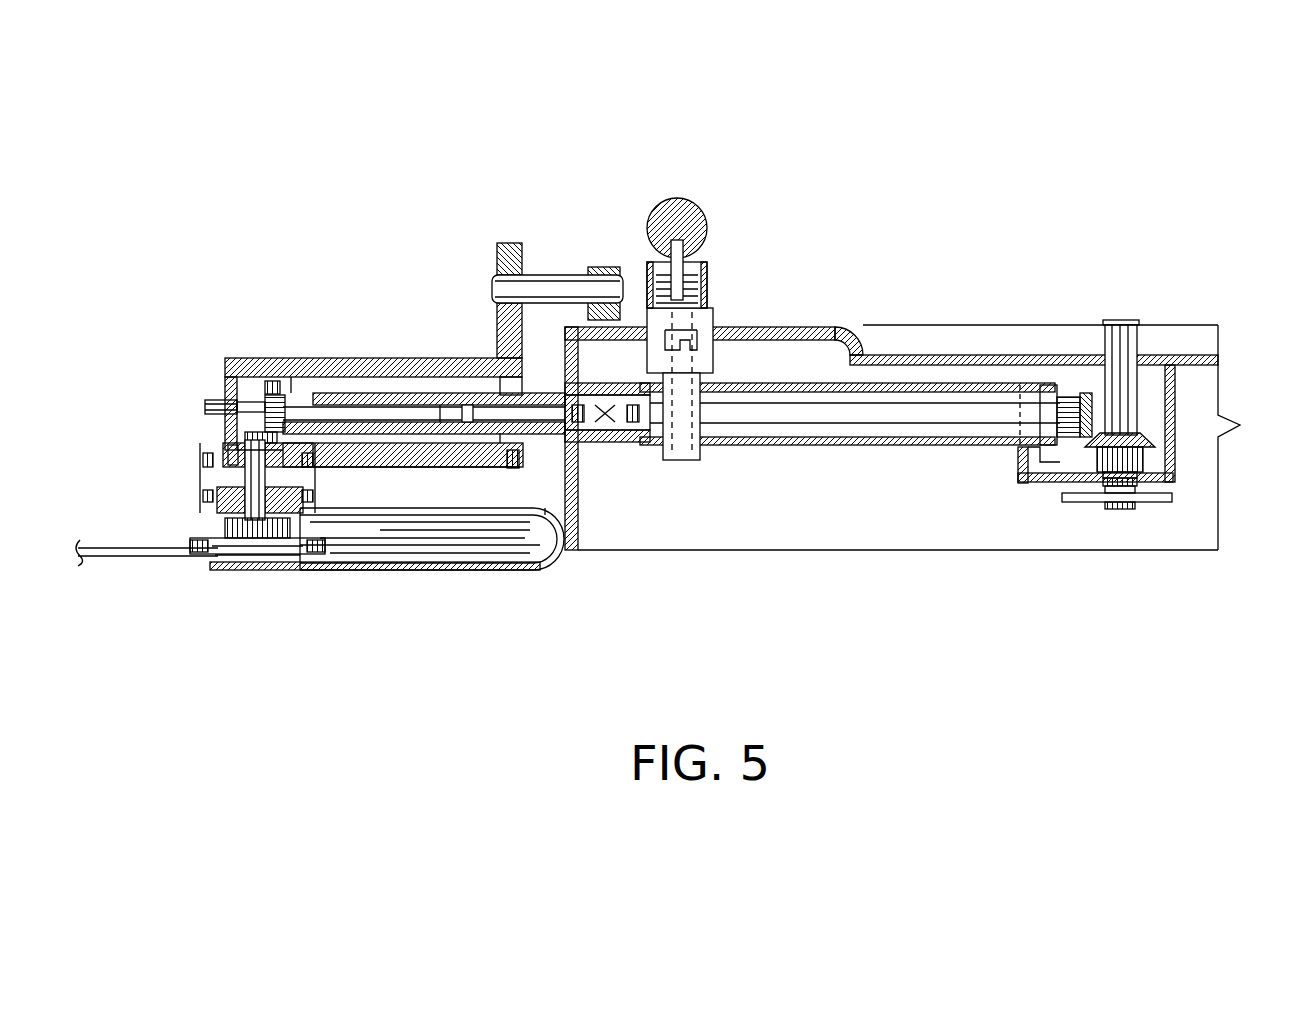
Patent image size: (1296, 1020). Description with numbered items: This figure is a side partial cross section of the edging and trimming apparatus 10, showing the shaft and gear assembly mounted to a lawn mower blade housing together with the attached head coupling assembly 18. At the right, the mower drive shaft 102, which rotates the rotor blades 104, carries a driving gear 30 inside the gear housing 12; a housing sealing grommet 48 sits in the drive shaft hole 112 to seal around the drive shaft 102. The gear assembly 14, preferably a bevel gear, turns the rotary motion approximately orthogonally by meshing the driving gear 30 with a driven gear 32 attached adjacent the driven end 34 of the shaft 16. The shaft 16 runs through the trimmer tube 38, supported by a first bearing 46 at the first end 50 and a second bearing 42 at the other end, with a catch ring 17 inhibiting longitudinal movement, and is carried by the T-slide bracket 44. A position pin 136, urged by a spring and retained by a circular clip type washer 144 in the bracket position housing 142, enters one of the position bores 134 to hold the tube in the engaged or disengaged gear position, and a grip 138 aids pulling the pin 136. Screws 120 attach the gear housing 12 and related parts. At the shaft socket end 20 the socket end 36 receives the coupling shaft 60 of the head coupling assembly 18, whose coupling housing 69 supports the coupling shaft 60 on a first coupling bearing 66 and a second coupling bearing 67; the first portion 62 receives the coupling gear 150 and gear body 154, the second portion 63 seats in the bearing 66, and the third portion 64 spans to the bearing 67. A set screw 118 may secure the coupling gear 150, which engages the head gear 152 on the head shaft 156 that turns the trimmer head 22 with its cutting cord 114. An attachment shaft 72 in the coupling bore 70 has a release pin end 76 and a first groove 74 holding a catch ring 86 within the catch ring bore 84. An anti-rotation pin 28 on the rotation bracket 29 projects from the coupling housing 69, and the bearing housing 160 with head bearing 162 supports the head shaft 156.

The edging and trimming apparatus 10 is at (470, 146).
The gear housing 12 is at (1207, 355).
The gear assembly 14 is at (1070, 302).
The shaft 16 is at (836, 408).
The catch ring 17 is at (1005, 397).
The head coupling assembly 18 is at (392, 322).
The shaft socket end 20 is at (623, 443).
The trimmer head 22 is at (227, 546).
The anti-rotation pin 28 is at (553, 285).
The rotation bracket 29 is at (512, 245).
The driving gear 30 is at (1147, 437).
The driven gear 32 is at (1088, 390).
The driven end 34 is at (1045, 393).
The socket end 36 is at (592, 443).
The trimmer tube 38 is at (752, 445).
The second bearing 42 is at (643, 443).
The T-slide bracket 44 is at (722, 445).
The first bearing 46 is at (1035, 458).
The housing sealing grommet 48 is at (1093, 488).
The first end 50 is at (1030, 485).
The coupling shaft 60 is at (232, 392).
The first portion 62 is at (333, 470).
The second portion 63 is at (318, 474).
The third portion 64 is at (418, 412).
The first coupling bearing 66 is at (322, 392).
The second coupling bearing 67 is at (547, 560).
The coupling housing 69 is at (258, 372).
The coupling bore 70 is at (380, 420).
The attachment shaft 72 is at (238, 396).
The first groove 74 is at (452, 512).
The release pin end 76 is at (228, 400).
The catch ring bore 84 is at (466, 405).
The catch ring 86 is at (440, 393).
The drive shaft 102 is at (1118, 506).
The rotor blades 104 is at (1157, 500).
The drive shaft hole 112 is at (1053, 483).
The cutting cord 114 is at (88, 560).
The set screw 118 is at (270, 380).
The screws 120 is at (198, 470).
The position bores 134 is at (715, 307).
The position pin 136 is at (667, 262).
The grip 138 is at (675, 225).
The bracket position housing 142 is at (717, 360).
The circular clip type washer 144 is at (690, 290).
The coupling gear 150 is at (276, 394).
The head gear 152 is at (210, 400).
The gear body 154 is at (297, 376).
The head shaft 156 is at (257, 513).
The bearing housing 160 is at (207, 498).
The head bearing 162 is at (233, 477).